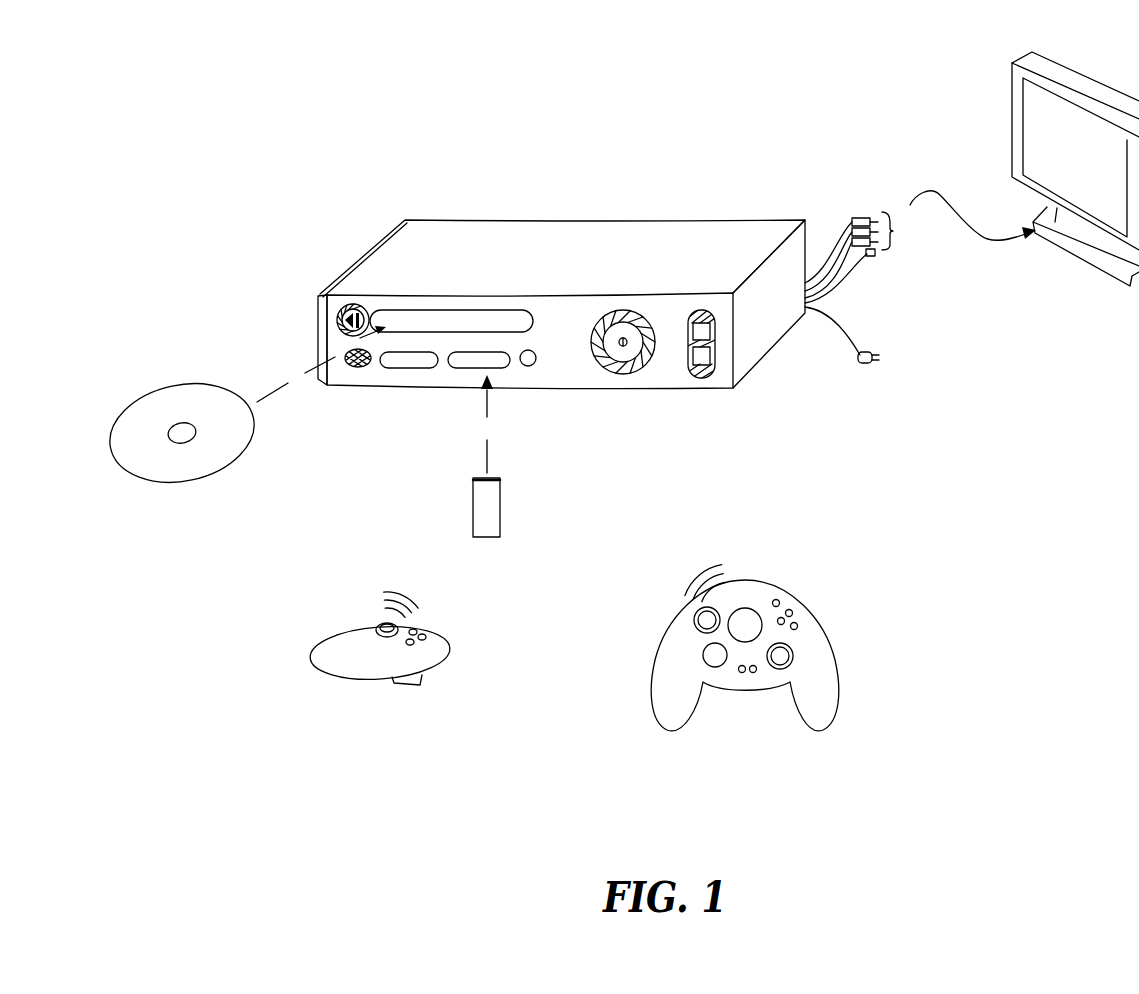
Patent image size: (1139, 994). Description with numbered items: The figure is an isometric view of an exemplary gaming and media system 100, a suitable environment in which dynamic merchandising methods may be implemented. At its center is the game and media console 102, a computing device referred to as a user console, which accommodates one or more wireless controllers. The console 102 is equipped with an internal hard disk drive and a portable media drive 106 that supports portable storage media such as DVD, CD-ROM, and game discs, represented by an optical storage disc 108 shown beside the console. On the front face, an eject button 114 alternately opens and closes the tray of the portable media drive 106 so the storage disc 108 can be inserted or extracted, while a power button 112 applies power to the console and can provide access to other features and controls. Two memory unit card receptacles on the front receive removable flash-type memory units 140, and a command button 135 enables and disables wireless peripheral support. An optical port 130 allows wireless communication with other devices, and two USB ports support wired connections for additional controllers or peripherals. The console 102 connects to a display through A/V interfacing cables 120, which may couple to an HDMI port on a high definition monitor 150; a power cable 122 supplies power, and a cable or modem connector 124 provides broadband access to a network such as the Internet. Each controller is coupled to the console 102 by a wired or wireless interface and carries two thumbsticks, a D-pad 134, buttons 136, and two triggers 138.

The gaming and media system 100 is at (591, 185).
The game and media console 102 is at (437, 228).
The portable media drive 106 is at (455, 310).
The optical storage disc 108 is at (192, 478).
The power button 112 is at (623, 375).
The eject button 114 is at (340, 322).
The A/V interfacing cables 120 is at (856, 217).
The power cable 122 is at (860, 365).
The cable or modem connector 124 is at (875, 258).
The optical port 130 is at (355, 370).
The D-pad 134 is at (703, 655).
The command button 135 is at (528, 367).
The buttons 136 is at (793, 612).
The triggers 138 is at (420, 694).
The removable flash-type memory unit 140 is at (490, 537).
The high definition monitor 150 is at (1012, 128).